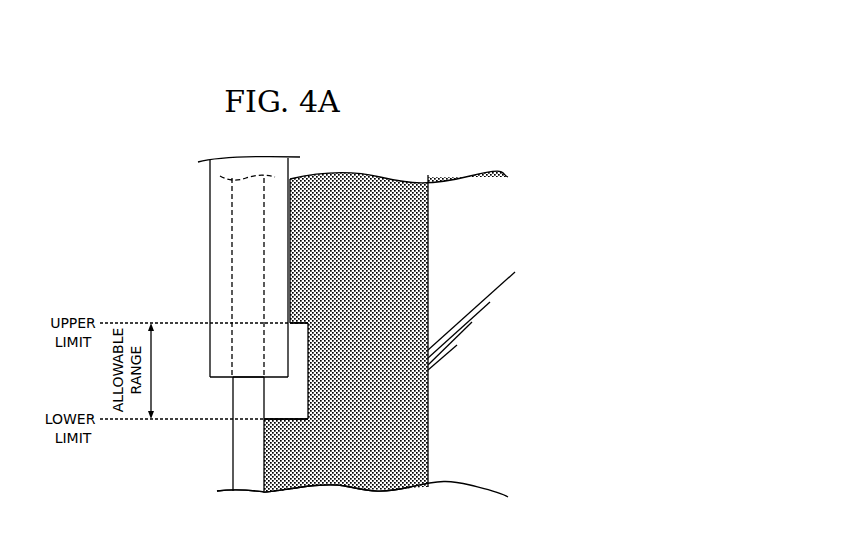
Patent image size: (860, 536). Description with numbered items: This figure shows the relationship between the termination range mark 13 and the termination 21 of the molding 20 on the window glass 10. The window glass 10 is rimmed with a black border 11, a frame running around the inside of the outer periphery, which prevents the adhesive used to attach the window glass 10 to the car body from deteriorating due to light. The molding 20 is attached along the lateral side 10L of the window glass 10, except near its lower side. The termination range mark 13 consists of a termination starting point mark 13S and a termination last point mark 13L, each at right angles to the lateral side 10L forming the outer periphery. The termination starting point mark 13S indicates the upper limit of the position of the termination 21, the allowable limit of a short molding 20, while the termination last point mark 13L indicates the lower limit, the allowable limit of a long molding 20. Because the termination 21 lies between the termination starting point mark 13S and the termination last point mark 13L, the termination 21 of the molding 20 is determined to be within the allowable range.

The window glass 10 is at (370, 170).
The lateral side 10L is at (233, 475).
The black border 11 is at (354, 488).
The termination range mark 13 is at (215, 392).
The termination starting point mark 13S is at (300, 323).
The termination last point mark 13L is at (290, 416).
The molding 20 is at (203, 227).
The termination 21 is at (242, 378).